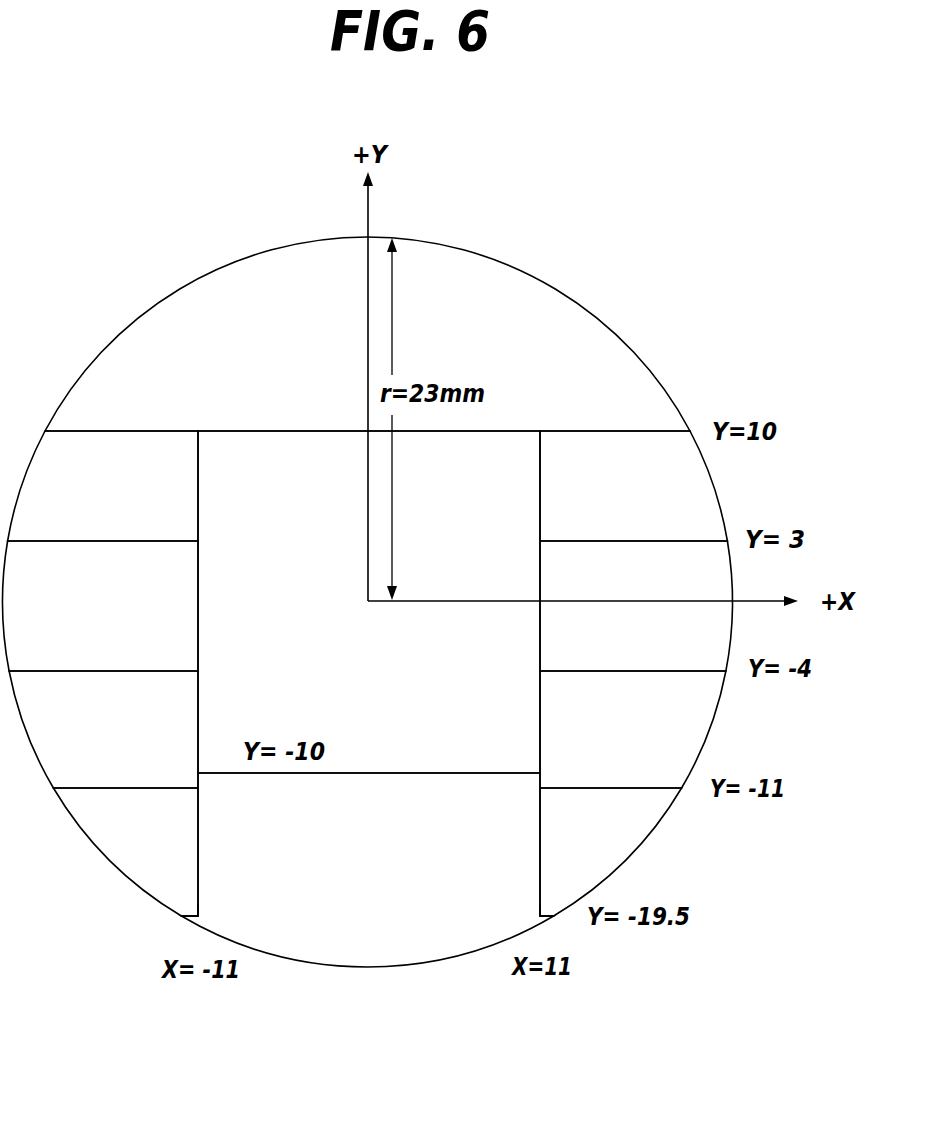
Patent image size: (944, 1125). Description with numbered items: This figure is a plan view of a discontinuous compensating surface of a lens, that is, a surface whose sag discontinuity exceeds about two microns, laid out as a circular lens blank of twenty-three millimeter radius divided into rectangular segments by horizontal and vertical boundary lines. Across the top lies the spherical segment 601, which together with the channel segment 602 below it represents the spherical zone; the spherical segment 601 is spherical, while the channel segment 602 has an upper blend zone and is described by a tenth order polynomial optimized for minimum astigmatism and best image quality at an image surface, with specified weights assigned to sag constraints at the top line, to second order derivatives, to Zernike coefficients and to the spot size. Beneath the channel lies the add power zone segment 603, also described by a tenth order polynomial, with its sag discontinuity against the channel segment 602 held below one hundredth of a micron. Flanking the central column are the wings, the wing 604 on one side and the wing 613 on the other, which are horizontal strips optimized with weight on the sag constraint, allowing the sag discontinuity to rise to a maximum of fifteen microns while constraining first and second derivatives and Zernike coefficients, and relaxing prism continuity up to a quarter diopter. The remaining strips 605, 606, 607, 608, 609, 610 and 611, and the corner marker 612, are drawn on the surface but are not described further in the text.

The spherical segment 601 is at (312, 385).
The channel segment 602 is at (337, 638).
The add power zone segment 603 is at (385, 878).
The wing 604 is at (655, 507).
The middle right region of wafer 605 is at (665, 645).
The lower right region of wafer 606 is at (652, 733).
The upper left region of wafer 607 is at (127, 503).
The middle left region of wafer 608 is at (117, 620).
The lower left region of wafer 609 is at (129, 742).
The bottom right region of wafer 610 is at (610, 850).
The bottom left region of wafer 611 is at (169, 848).
The left corner point 612 is at (189, 917).
The wing 613 is at (548, 917).